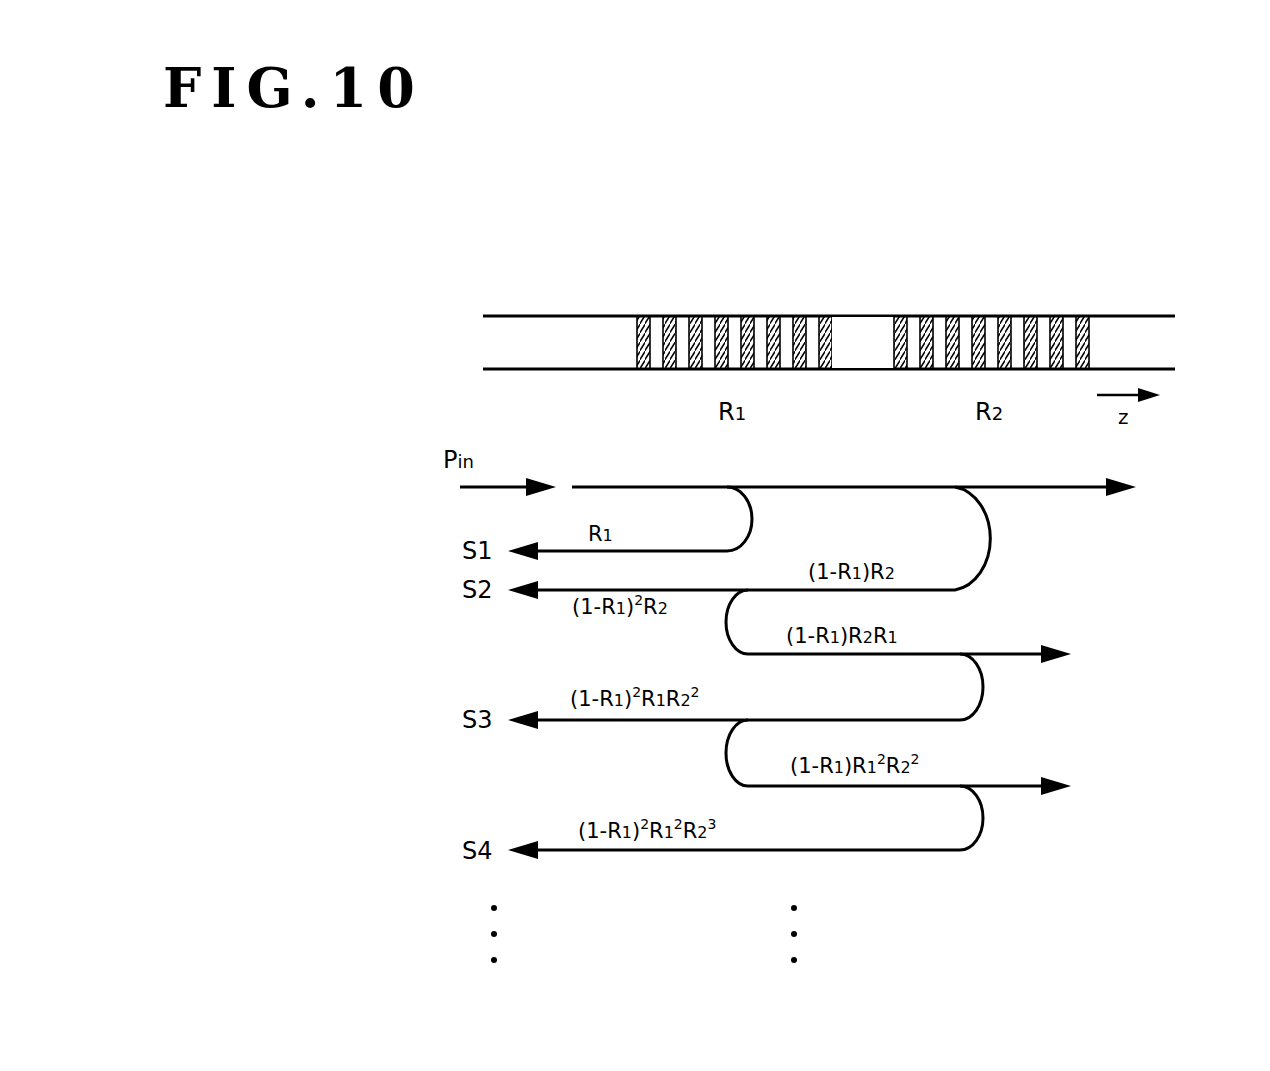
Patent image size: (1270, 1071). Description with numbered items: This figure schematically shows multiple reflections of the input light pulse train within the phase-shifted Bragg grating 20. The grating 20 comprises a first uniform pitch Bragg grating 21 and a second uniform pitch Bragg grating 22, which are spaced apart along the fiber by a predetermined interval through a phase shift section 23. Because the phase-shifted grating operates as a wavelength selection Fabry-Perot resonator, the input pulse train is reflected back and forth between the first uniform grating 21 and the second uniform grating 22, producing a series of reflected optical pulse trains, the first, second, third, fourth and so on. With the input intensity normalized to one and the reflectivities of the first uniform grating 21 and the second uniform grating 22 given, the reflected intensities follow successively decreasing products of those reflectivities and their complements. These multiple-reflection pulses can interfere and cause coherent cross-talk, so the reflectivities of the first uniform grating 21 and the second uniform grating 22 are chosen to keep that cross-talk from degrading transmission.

The phase-shifted Bragg grating 20 is at (1098, 241).
The first uniform pitch Bragg grating UBG(1) 21 is at (825, 307).
The second uniform pitch Bragg grating UBG(2) 22 is at (1098, 307).
The phase shift section 23 is at (905, 307).